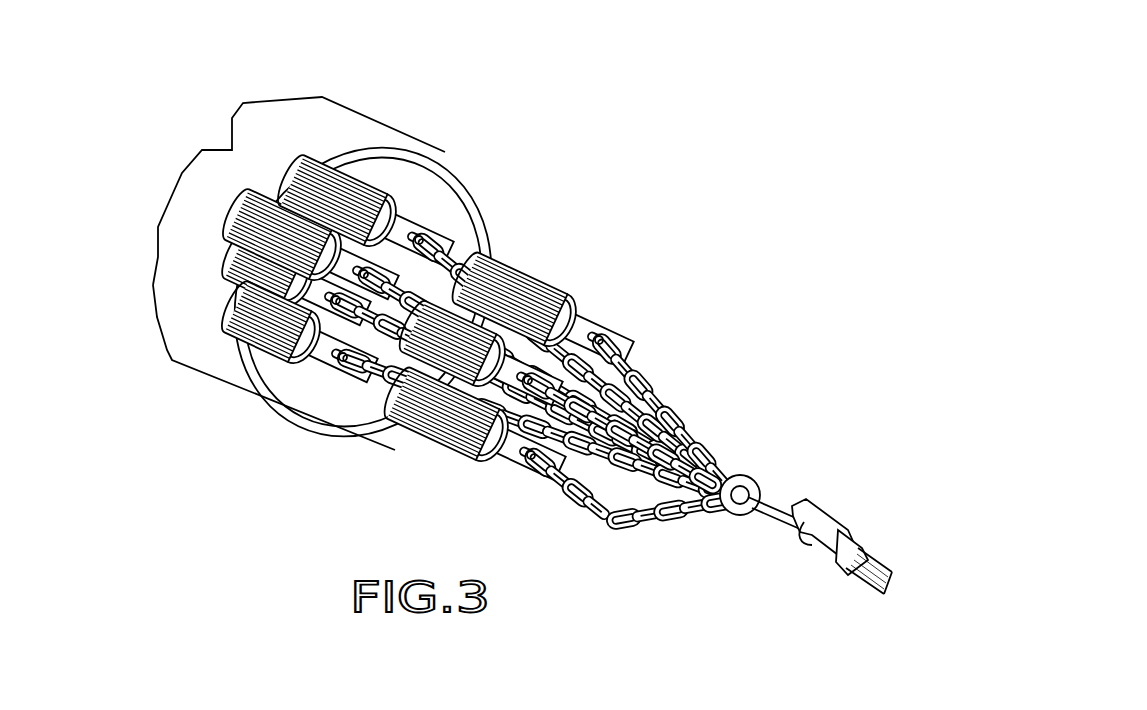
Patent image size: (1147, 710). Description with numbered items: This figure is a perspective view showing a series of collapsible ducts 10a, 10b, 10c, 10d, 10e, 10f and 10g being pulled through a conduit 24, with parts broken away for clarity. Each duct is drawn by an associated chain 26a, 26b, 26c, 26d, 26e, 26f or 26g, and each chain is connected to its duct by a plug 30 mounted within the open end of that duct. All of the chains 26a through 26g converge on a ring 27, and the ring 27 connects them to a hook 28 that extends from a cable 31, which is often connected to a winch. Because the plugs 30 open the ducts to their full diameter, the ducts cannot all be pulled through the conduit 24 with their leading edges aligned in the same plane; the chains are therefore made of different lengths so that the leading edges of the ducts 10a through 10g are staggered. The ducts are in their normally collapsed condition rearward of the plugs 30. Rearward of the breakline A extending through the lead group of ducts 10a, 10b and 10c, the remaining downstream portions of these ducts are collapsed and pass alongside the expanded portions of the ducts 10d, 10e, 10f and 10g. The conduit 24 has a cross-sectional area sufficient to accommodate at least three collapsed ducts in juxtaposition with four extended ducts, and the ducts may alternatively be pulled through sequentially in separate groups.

The conduit 24 is at (316, 124).
The duct 10a is at (455, 446).
The duct 10b is at (426, 385).
The duct 10c is at (543, 283).
The duct 10d is at (333, 245).
The duct 10e is at (372, 192).
The duct 10f is at (287, 290).
The duct 10g is at (300, 330).
The chain 26a is at (634, 526).
The chain 26b is at (598, 457).
The chain 26c is at (648, 392).
The chain 26d is at (472, 280).
The chain 26e is at (446, 257).
The chain 26f is at (358, 398).
The chain 26g is at (320, 392).
The plug 30 is at (418, 236).
The breakline A is at (486, 236).
The ring 27 is at (745, 475).
The hook 28 is at (816, 512).
The cable 31 is at (880, 580).